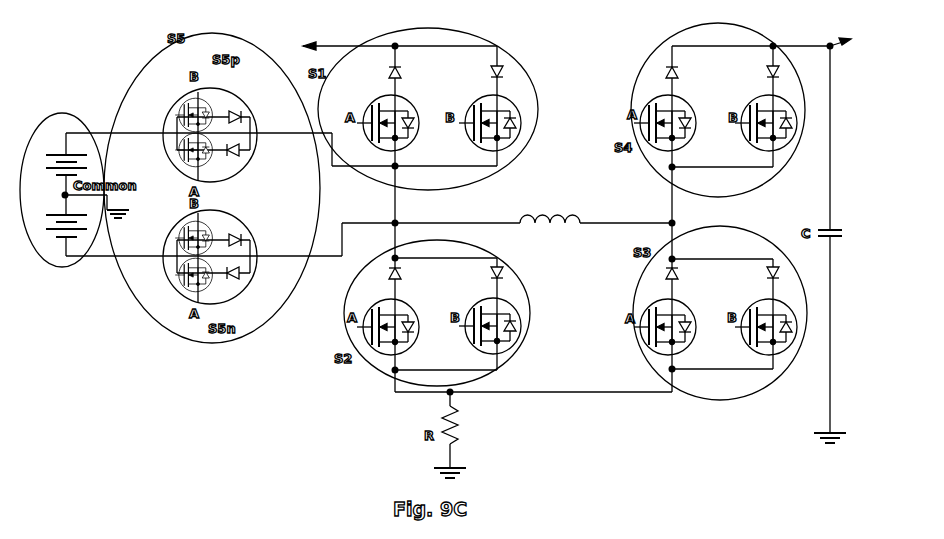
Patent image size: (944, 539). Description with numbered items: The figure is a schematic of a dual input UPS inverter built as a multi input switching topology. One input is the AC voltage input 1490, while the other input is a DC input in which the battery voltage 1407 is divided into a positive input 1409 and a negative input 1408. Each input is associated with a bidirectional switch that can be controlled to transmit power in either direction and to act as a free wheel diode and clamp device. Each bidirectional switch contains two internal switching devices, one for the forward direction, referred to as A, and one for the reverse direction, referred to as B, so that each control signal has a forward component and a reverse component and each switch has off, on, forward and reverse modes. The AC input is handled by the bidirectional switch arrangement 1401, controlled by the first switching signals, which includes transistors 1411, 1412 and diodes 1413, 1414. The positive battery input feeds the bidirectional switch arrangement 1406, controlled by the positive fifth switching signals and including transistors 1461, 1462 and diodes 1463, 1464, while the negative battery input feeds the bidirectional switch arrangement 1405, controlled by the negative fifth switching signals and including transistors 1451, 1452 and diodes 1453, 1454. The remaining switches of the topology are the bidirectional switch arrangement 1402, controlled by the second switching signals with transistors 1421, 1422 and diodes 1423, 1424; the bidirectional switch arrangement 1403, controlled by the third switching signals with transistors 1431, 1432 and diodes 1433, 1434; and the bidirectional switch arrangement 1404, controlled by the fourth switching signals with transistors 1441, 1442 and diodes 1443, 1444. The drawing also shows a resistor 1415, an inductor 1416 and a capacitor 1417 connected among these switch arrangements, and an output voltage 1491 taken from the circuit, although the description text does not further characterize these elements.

The bidirectional switch arrangement 1401 is at (538, 107).
The bidirectional switch arrangement 1402 is at (345, 330).
The bidirectional switch arrangement 1403 is at (645, 274).
The bidirectional switch arrangement 1404 is at (648, 60).
The bidirectional switch arrangement 1405 is at (222, 300).
The bidirectional switch arrangement 1406 is at (220, 88).
The battery voltage 1407 is at (62, 114).
The negative input 1408 is at (90, 270).
The positive input 1409 is at (103, 113).
The transistor 1411 is at (405, 118).
The transistor 1412 is at (512, 140).
The diode 1413 is at (402, 72).
The diode 1414 is at (503, 73).
The resistor R 1415 is at (460, 440).
The inductor 1416 is at (574, 214).
The capacitor C 1417 is at (815, 231).
The transistor 1421 is at (405, 320).
The transistor 1422 is at (506, 350).
The diode 1423 is at (401, 273).
The diode 1424 is at (502, 275).
The transistor 1431 is at (650, 341).
The transistor 1432 is at (756, 341).
The diode 1433 is at (678, 273).
The diode 1434 is at (767, 274).
The transistor 1441 is at (664, 150).
The transistor 1442 is at (756, 138).
The diode 1443 is at (678, 73).
The diode 1444 is at (767, 73).
The transistor 1451 is at (180, 234).
The transistor 1452 is at (180, 277).
The diode 1453 is at (246, 238).
The diode 1454 is at (246, 274).
The transistor 1461 is at (180, 152).
The transistor 1462 is at (180, 110).
The diode 1463 is at (246, 151).
The diode 1464 is at (246, 115).
The AC voltage input Vin 1490 is at (302, 45).
The output voltage Vout 1491 is at (838, 48).